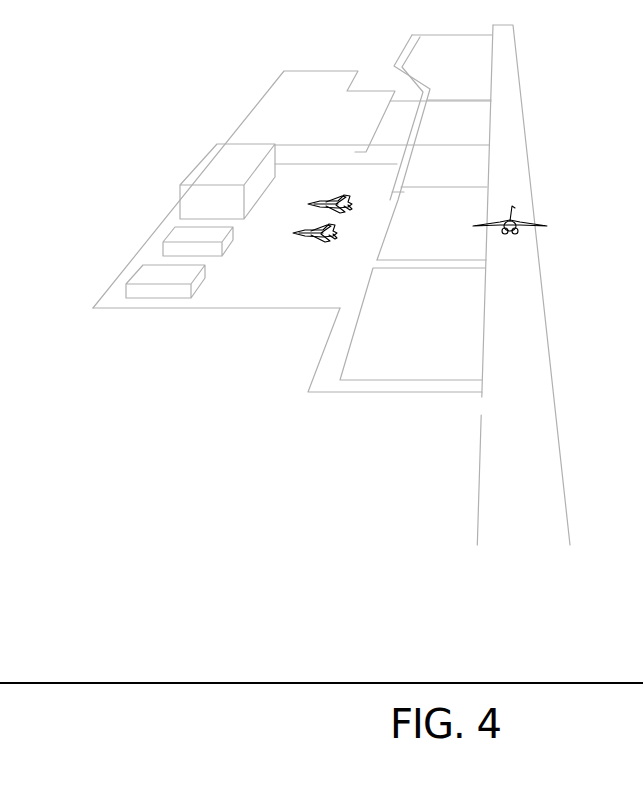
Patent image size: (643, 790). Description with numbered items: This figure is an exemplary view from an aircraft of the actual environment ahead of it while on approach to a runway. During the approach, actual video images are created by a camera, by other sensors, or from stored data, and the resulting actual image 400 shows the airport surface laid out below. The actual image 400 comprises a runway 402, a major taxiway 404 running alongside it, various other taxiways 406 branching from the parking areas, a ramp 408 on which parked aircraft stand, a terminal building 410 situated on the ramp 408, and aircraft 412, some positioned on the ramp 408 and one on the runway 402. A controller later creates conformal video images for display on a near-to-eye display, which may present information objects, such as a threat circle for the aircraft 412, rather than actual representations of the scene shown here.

The actual image 400 is at (288, 438).
The runway 402 is at (518, 148).
The major taxiway 404 is at (327, 362).
The other taxiways 406 is at (407, 387).
The ramp 408 is at (229, 306).
The terminal building 410 is at (197, 178).
The aircraft 412 is at (328, 200).